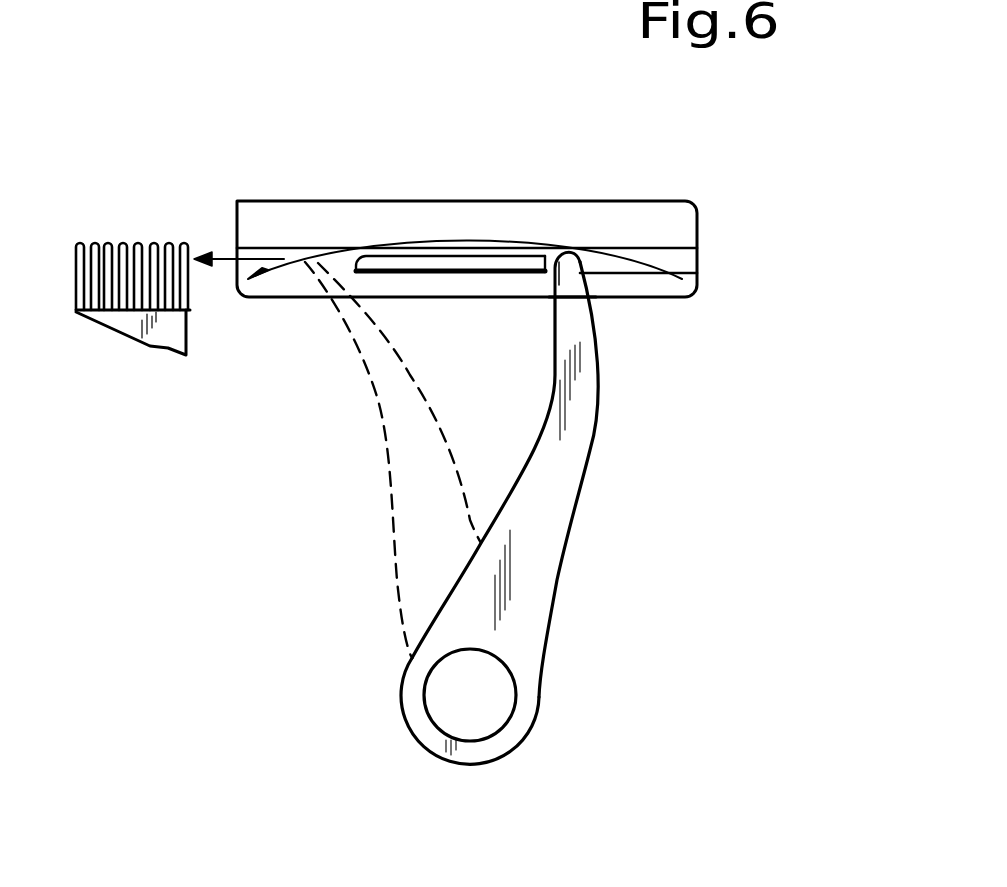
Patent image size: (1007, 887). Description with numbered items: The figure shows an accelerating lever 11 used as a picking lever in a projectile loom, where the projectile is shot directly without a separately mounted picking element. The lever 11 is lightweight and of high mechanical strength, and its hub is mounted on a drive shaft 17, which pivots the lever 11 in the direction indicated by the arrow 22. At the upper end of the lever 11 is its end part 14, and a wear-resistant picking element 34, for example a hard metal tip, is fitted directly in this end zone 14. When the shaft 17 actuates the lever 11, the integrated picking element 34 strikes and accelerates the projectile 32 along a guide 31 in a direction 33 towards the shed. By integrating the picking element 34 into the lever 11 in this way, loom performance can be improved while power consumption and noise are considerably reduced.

The accelerating lever 11 is at (578, 517).
The end part 14 is at (567, 283).
The drive shaft 17 is at (468, 697).
The arrow 22 is at (294, 264).
The guide 31 is at (600, 222).
The projectile 32 is at (462, 263).
The direction 33 is at (229, 257).
The wear-resistant picking element 34 is at (566, 250).